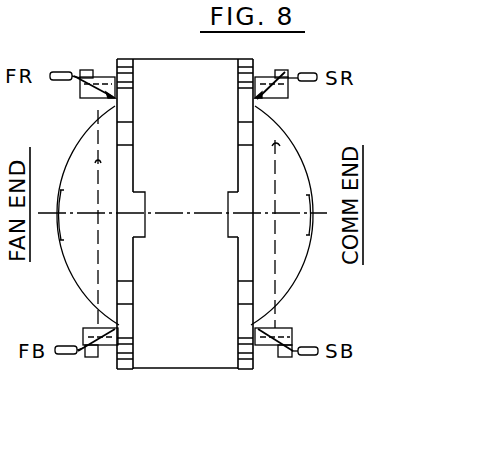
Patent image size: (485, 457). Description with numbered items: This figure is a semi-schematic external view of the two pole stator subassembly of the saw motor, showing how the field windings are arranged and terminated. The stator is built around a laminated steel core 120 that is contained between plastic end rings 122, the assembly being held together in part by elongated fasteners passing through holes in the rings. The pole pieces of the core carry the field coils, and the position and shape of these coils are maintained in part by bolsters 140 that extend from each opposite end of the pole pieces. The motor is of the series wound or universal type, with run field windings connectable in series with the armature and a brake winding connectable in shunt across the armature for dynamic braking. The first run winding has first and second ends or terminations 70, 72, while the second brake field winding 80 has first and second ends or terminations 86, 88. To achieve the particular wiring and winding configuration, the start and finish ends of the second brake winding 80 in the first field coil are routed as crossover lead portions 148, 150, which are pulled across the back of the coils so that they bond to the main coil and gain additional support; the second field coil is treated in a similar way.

The first end of first run winding 70 is at (288, 62).
The second end of first run winding 72 is at (70, 60).
The second brake field winding 80 is at (98, 166).
The first end of second brake field winding 86 is at (306, 356).
The second end of second brake field winding 88 is at (75, 358).
The laminated steel core 120 is at (198, 369).
The plastic end rings 122 is at (127, 370).
The bolsters 140 is at (62, 243).
The crossover lead portion 148 is at (280, 141).
The crossover lead portion 150 is at (98, 143).